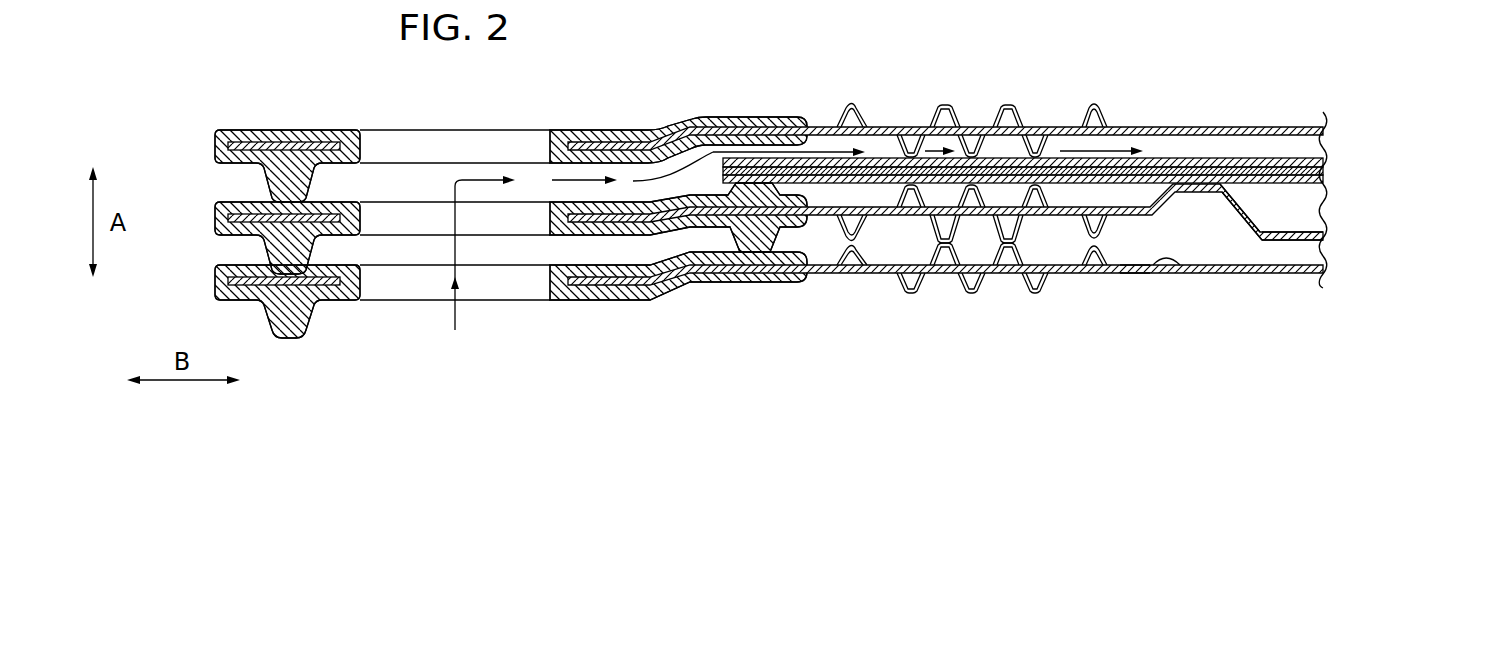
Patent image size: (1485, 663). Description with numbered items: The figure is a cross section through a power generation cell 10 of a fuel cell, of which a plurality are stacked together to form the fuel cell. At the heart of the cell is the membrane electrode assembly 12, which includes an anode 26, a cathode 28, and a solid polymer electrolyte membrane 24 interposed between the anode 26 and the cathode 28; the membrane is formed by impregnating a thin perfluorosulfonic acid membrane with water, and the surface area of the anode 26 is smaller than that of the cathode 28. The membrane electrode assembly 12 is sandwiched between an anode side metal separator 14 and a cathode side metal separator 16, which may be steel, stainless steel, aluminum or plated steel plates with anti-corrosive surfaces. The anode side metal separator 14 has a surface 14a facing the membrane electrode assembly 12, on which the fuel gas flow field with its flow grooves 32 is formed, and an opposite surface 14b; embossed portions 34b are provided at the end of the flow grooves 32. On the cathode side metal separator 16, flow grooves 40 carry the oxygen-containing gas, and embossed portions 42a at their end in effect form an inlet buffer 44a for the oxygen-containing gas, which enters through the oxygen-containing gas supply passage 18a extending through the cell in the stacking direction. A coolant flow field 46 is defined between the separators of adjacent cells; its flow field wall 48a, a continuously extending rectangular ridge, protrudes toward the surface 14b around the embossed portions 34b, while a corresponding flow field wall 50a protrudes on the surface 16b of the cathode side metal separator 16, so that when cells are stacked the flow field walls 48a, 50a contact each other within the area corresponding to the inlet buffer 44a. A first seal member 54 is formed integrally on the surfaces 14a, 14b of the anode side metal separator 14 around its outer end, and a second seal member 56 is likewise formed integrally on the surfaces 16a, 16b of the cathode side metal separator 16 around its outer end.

The power generation cell 10 is at (1064, 37).
The membrane electrode assembly 12 is at (1086, 177).
The anode side metal separator 14 is at (1322, 271).
The surface of anode side metal separator 14a is at (1266, 212).
The surface of anode side metal separator 14b is at (1252, 238).
The cathode side metal separator 16 is at (1244, 116).
The surface of cathode side metal separator 16a is at (1146, 275).
The surface of cathode side metal separator 16b is at (1178, 267).
The oxygen-containing gas supply passage 18a is at (393, 147).
The solid polymer electrolyte membrane 24 is at (1323, 171).
The anode 26 is at (1054, 197).
The cathode 28 is at (1323, 160).
The flow grooves 32 is at (1296, 212).
The embossed portions 34b is at (908, 197).
The flow grooves 40 is at (1189, 152).
The embossed portions 42a is at (975, 152).
The inlet buffer 44a is at (890, 283).
The coolant flow field 46 is at (1178, 226).
The flow field wall 48a is at (836, 238).
The flow field wall 50a is at (851, 112).
The first seal member 54 is at (215, 219).
The second seal member 56 is at (215, 282).